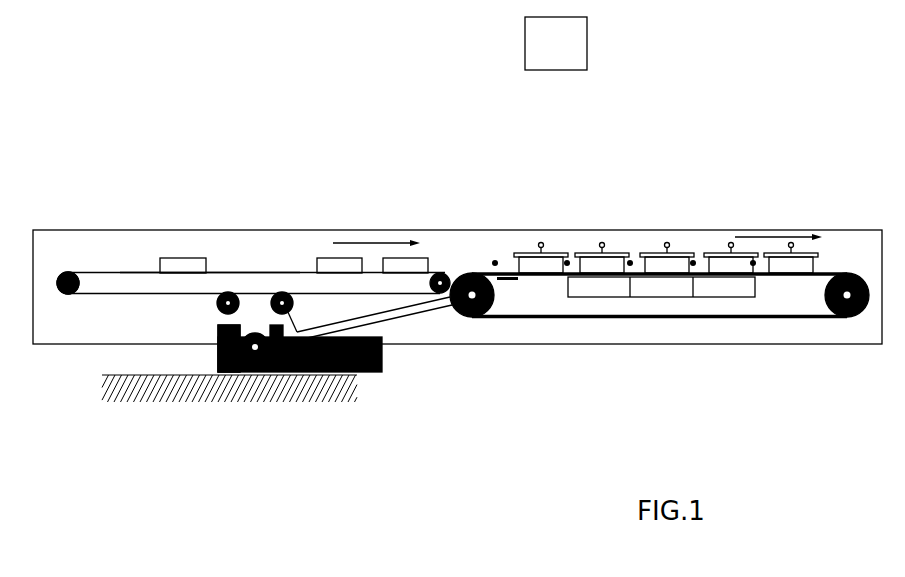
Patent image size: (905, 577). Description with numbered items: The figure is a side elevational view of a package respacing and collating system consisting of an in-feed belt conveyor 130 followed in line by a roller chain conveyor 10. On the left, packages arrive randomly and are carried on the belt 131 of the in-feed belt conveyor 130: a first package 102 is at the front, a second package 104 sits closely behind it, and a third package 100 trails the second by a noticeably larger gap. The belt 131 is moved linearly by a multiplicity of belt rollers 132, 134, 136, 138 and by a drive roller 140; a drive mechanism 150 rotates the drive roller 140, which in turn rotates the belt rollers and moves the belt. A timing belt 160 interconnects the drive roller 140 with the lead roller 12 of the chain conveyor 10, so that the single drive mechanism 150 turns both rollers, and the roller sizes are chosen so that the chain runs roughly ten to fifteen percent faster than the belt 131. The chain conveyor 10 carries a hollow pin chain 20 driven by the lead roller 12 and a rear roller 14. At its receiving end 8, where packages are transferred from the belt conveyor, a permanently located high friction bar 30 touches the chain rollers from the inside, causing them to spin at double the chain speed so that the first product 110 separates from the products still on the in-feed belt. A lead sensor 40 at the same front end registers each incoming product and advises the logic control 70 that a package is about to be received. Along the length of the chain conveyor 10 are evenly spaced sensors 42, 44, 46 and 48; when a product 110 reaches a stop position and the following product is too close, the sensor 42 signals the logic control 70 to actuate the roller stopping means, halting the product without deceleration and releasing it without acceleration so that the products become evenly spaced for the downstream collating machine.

The receiving end 8 is at (455, 272).
The chain conveyor 10 is at (790, 324).
The lead roller 12 is at (467, 318).
The rear roller 14 is at (840, 318).
The hollow pin chain 20 is at (745, 326).
The high friction bar 30 is at (507, 286).
The lead sensor 40 is at (495, 263).
The second sensor 42 is at (567, 263).
The sensor 44 is at (630, 263).
The sensor 46 is at (693, 263).
The sensor 48 is at (753, 263).
The logic control 70 is at (556, 43).
The third package 100 is at (178, 260).
The first package 102 is at (418, 243).
The second package 104 is at (353, 258).
The first product 110 is at (545, 267).
The in-feed belt conveyor 130 is at (88, 273).
The belt 131 is at (263, 273).
The belt roller 132 is at (68, 294).
The belt roller 134 is at (218, 312).
The belt roller 136 is at (312, 373).
The belt roller 138 is at (424, 305).
The drive roller 140 is at (268, 373).
The drive mechanism 150 is at (212, 367).
The timing belt 160 is at (390, 320).